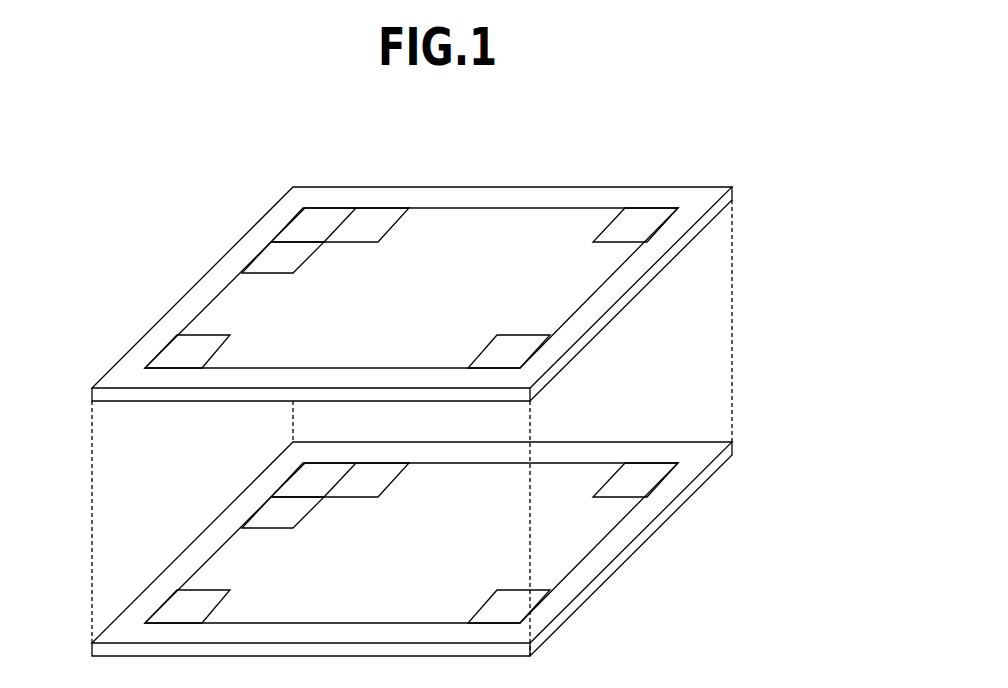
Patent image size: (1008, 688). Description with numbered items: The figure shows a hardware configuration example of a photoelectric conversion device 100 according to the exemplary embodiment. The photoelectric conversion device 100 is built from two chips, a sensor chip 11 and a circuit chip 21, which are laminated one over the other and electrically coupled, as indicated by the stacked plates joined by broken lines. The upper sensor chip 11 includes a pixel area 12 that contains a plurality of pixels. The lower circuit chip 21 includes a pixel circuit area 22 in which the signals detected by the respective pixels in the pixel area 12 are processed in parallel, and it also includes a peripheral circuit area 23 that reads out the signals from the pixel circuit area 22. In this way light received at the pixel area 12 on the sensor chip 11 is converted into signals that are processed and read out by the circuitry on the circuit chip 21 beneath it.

The photoelectric conversion device 100 is at (828, 252).
The sensor chip 11 is at (665, 270).
The pixel area 12 is at (242, 308).
The circuit chip 21 is at (668, 520).
The pixel circuit area 22 is at (238, 553).
The peripheral circuit area 23 is at (152, 602).